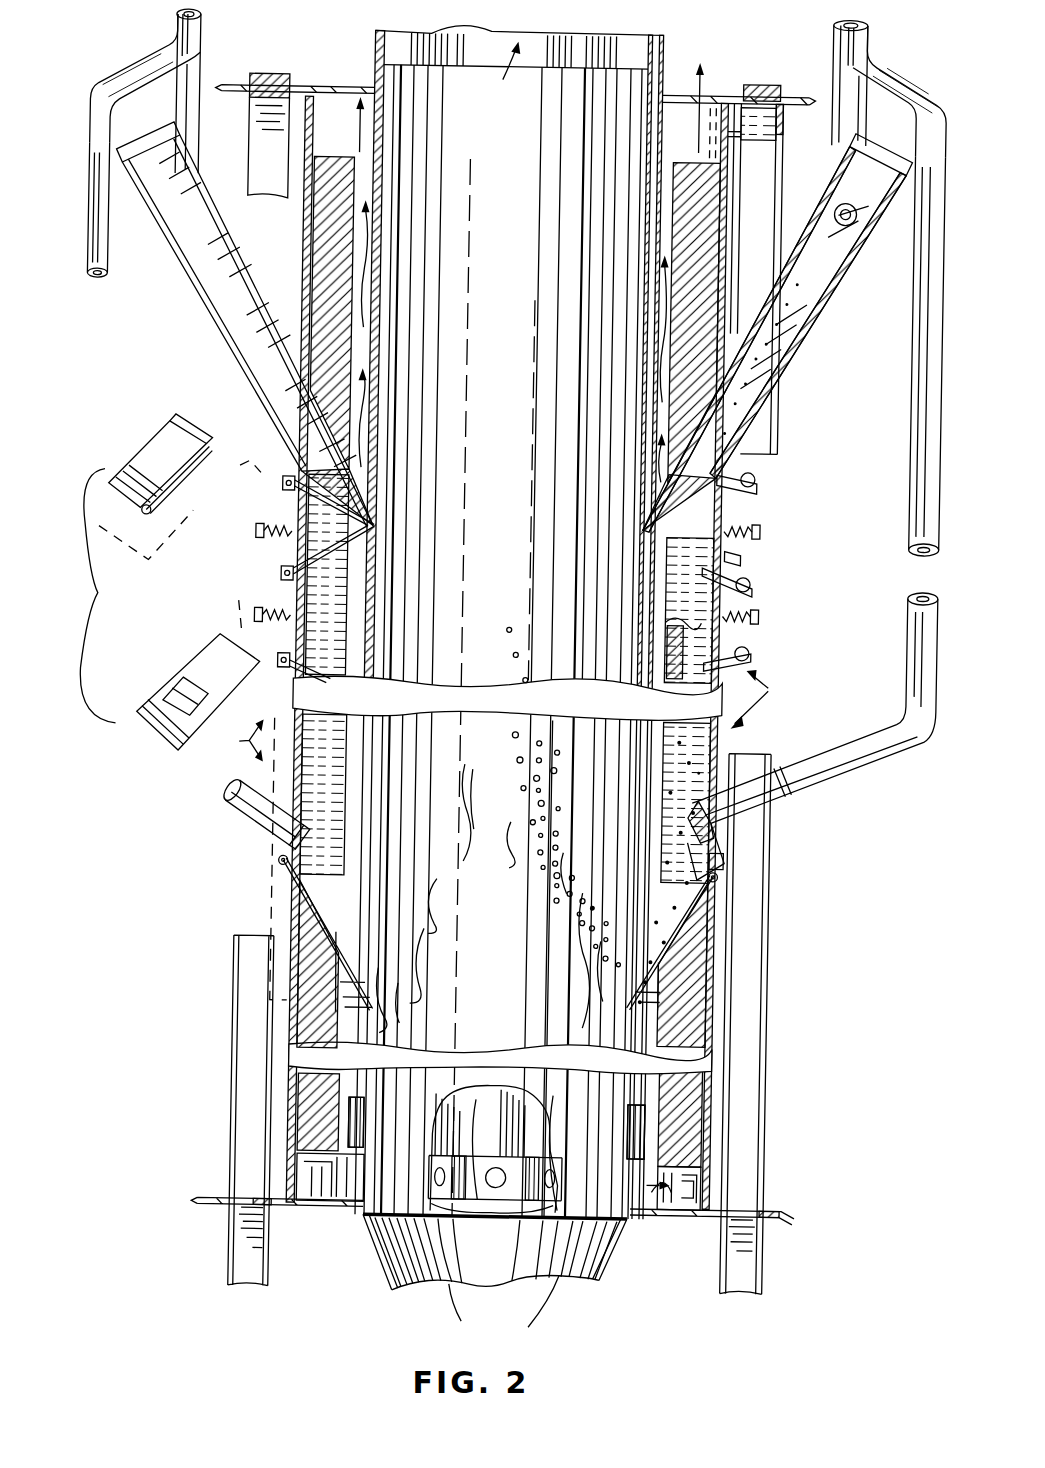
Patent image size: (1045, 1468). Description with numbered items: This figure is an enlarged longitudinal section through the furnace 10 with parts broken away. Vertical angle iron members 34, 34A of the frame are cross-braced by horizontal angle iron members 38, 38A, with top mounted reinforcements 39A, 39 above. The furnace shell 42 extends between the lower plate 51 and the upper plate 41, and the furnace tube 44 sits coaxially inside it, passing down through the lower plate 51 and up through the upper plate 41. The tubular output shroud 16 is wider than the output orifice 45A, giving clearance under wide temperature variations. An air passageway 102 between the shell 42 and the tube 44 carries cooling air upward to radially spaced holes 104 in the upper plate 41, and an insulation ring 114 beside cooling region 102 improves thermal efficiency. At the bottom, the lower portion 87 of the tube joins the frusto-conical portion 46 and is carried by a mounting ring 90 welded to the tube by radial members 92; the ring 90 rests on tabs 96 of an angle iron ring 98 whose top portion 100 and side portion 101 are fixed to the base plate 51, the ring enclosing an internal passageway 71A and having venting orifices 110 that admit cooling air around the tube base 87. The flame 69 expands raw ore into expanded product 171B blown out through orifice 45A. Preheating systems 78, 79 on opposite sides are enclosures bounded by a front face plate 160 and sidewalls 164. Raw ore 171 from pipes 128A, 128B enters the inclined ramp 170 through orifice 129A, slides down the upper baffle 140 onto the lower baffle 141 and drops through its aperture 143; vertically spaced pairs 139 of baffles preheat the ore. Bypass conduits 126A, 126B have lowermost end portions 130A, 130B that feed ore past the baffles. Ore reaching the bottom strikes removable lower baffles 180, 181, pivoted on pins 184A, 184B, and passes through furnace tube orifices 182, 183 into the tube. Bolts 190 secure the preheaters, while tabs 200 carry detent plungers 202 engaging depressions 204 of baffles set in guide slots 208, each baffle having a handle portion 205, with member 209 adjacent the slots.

The furnace 10 is at (292, 72).
The tubular output shroud 16 is at (648, 56).
The angle iron member 34 is at (773, 176).
The angle iron member 34A is at (258, 163).
The horizontal angle iron member 38 is at (798, 1214).
The horizontal angle iron member 38A is at (219, 1206).
The right top flange 39 is at (810, 93).
The top mounted reinforcement 39A is at (228, 88).
The upper plate 41 is at (258, 78).
The furnace shell 42 is at (295, 232).
The furnace tube 44 is at (366, 735).
The output orifice 45A is at (508, 73).
The frusto-conical portion 46 is at (373, 1268).
The lower plate 51 is at (264, 1205).
The flame 69 is at (494, 852).
The internal passageway 71A is at (692, 1232).
The preheating system 78 is at (766, 700).
The preheating system 79 is at (249, 858).
The lower portion of furnace tube 87 is at (392, 1228).
The mounting ring 90 is at (472, 1098).
The radially spaced-apart members 92 is at (505, 1086).
The tabs 96 is at (470, 1158).
The angle iron ring 98 is at (693, 1186).
The top portion 100 is at (705, 1150).
The side portion 101 is at (670, 1188).
The air passageway 102 is at (345, 269).
The holes 104 is at (340, 100).
The venting orifices 110 is at (316, 1197).
The insulation ring 114 is at (306, 936).
The bypass conduit 126A is at (112, 285).
The bypass conduit 126B is at (905, 476).
The pipe 128A is at (175, 101).
The pipe 128B is at (845, 112).
The orifice 129A is at (845, 218).
The lowermost end portion 130A is at (312, 816).
The lowermost end portion 130B is at (692, 797).
The pairs of baffles 139 is at (92, 600).
The upper baffle 140 is at (136, 446).
The lower baffle 141 is at (188, 651).
The aperture 143 is at (174, 692).
The front face plate 160 is at (285, 555).
The sidewall 164 is at (305, 601).
The inclined ramp 170 is at (232, 365).
The raw ore 171 is at (746, 364).
The expanded product 171B is at (500, 628).
The lower baffle 180 is at (297, 864).
The lower baffle 181 is at (706, 893).
The furnace tube orifice 182 is at (364, 835).
The furnace tube orifice 183 is at (632, 838).
The pin 184A is at (281, 863).
The pin 184B is at (720, 870).
The mounting bolt 190 is at (768, 526).
The tab 200 is at (279, 578).
The detent plunger 202 is at (278, 676).
The concave depression 204 is at (184, 458).
The handle portion 205 is at (200, 455).
The guide slot 208 is at (291, 485).
The strut 209 is at (332, 543).